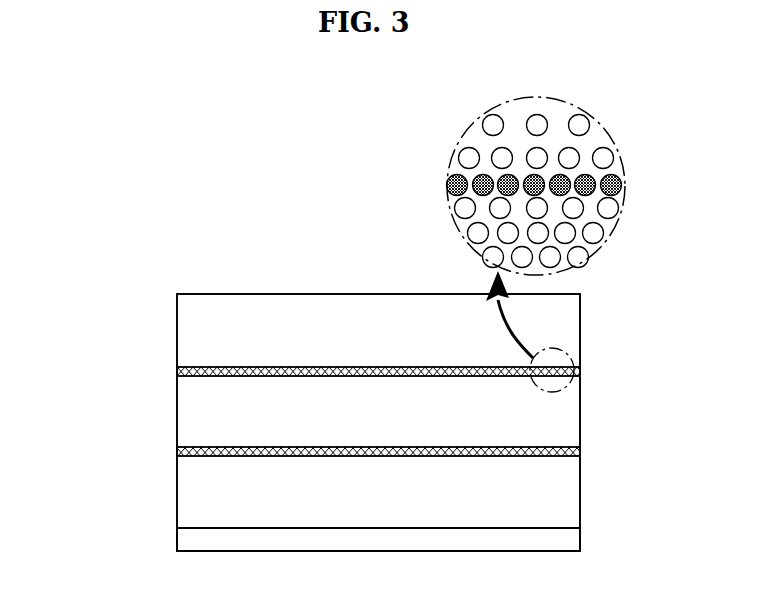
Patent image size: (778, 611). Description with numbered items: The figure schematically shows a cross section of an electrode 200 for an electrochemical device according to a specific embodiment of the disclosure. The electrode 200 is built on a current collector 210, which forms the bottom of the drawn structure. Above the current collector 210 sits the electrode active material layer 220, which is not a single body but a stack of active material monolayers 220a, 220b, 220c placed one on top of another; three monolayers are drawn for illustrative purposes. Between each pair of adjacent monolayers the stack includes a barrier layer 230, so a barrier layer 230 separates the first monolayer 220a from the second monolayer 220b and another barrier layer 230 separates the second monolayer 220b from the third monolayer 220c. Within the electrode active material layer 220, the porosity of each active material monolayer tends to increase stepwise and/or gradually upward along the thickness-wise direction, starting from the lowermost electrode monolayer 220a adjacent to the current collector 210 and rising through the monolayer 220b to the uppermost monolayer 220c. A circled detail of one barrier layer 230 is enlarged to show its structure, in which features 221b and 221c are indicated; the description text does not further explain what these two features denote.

The electrode for an electrochemical device 200 is at (213, 260).
The current collector 210 is at (183, 538).
The electrode active material layer 220 is at (314, 411).
The active material monolayer 220a is at (343, 492).
The active material monolayer 220b is at (183, 413).
The active material monolayer 220c is at (183, 336).
The barrier layer 230 is at (580, 372).
The second light emitting elements 221b is at (607, 213).
The third light emitting elements 221c is at (606, 157).